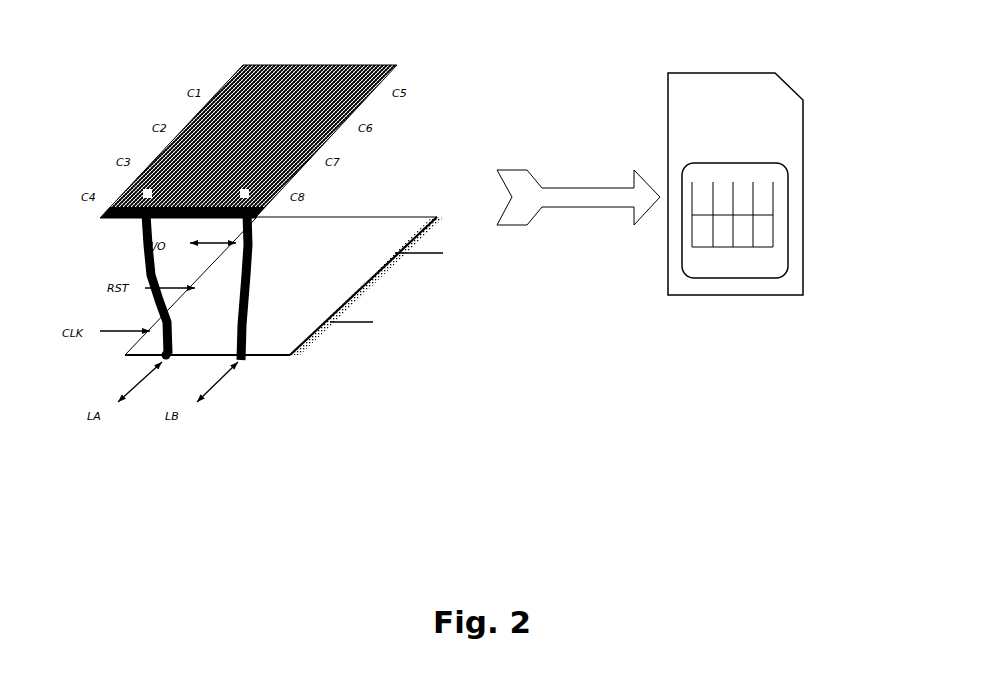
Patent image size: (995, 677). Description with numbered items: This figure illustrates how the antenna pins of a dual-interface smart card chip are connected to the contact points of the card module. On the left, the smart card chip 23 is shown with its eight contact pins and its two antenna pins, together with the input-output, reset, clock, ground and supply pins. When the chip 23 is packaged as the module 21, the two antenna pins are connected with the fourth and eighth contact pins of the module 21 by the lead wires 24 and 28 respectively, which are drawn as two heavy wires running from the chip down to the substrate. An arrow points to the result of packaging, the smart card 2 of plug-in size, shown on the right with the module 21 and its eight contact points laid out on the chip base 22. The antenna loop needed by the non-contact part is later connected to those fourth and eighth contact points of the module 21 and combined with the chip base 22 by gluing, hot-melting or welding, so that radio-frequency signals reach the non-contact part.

The smart card 2 is at (799, 205).
The module 21 is at (743, 268).
The chip base 22 is at (710, 102).
The smart card chip 23 is at (297, 285).
The lead wire 24 is at (138, 263).
The lead wire 28 is at (255, 262).